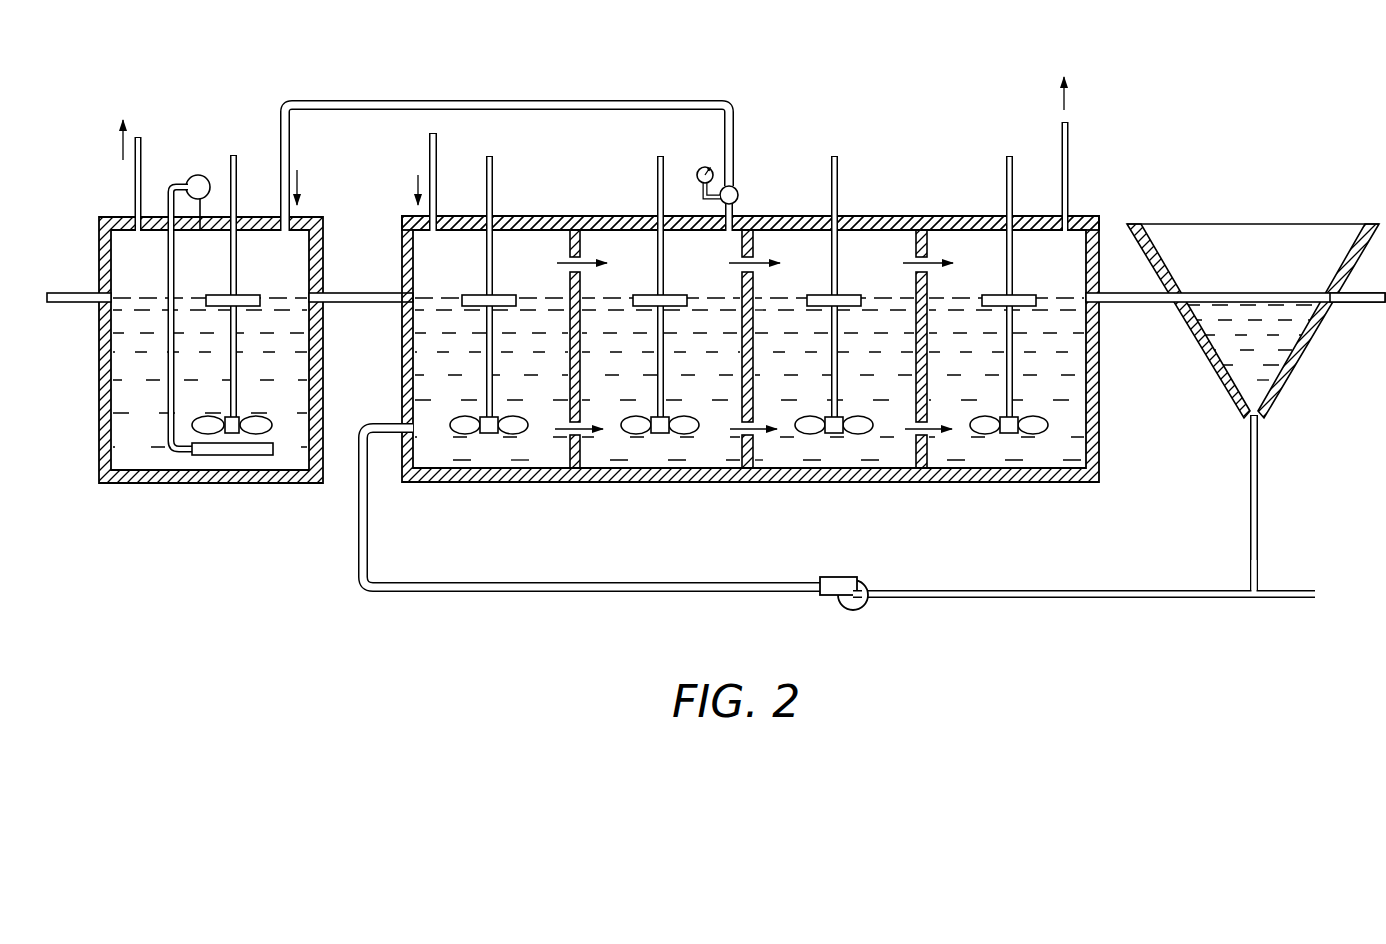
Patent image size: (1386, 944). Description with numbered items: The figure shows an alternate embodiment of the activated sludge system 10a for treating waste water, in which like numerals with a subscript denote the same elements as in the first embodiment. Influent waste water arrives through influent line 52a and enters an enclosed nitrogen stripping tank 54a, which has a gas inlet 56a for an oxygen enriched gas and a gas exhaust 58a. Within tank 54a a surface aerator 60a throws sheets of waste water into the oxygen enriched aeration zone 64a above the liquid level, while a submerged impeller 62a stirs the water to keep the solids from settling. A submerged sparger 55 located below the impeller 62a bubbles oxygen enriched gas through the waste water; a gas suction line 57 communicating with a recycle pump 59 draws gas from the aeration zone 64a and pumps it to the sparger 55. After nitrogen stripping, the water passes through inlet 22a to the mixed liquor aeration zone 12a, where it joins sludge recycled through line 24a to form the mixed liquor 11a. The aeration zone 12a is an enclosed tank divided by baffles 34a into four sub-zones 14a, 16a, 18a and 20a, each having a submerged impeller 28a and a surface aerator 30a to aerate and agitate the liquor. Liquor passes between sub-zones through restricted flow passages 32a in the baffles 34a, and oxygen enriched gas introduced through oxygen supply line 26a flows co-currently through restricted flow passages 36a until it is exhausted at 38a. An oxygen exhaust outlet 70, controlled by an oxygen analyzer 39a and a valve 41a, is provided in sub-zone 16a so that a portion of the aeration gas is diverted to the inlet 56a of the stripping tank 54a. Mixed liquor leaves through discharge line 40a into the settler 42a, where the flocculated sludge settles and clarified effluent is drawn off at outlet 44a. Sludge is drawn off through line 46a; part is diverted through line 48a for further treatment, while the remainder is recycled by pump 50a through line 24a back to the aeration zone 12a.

The activated sludge system 10a is at (1117, 127).
The mixed liquor 11a is at (459, 380).
The mixed liquor aeration zone 12a is at (882, 216).
The first sub-zone 14a is at (451, 276).
The second sub-zone 16a is at (712, 272).
The third sub-zone 18a is at (886, 272).
The fourth sub-zone 20a is at (1058, 268).
The inlet 22a is at (355, 303).
The recycled sludge line 24a is at (362, 542).
The oxygen supply line 26a is at (434, 150).
The submerged impeller 28a is at (468, 434).
The surface aerator 30a is at (503, 296).
The restricted flow passage 32a is at (560, 430).
The baffle 34a is at (582, 400).
The restricted flow passage 36a is at (582, 270).
The exhaust 38a is at (1070, 202).
The oxygen analyzer 39a is at (705, 167).
The discharge line 40a is at (1134, 299).
The valve 41a is at (735, 186).
The settler 42a is at (1214, 378).
The outlet 44a is at (1352, 301).
The sludge line 46a is at (1261, 505).
The line 48a is at (1288, 588).
The pump 50a is at (843, 582).
The influent line 52a is at (68, 296).
The nitrogen stripping tank 54a is at (100, 442).
The submerged sparger 55 is at (219, 456).
The gas inlet 56a is at (287, 162).
The gas suction line 57 is at (213, 208).
The gas exhaust 58a is at (133, 180).
The recycle pump 59 is at (202, 176).
The surface aerator 60a is at (240, 300).
The submerged impeller 62a is at (259, 425).
The aeration zone 64a is at (156, 268).
The oxygen exhaust outlet 70 is at (736, 212).